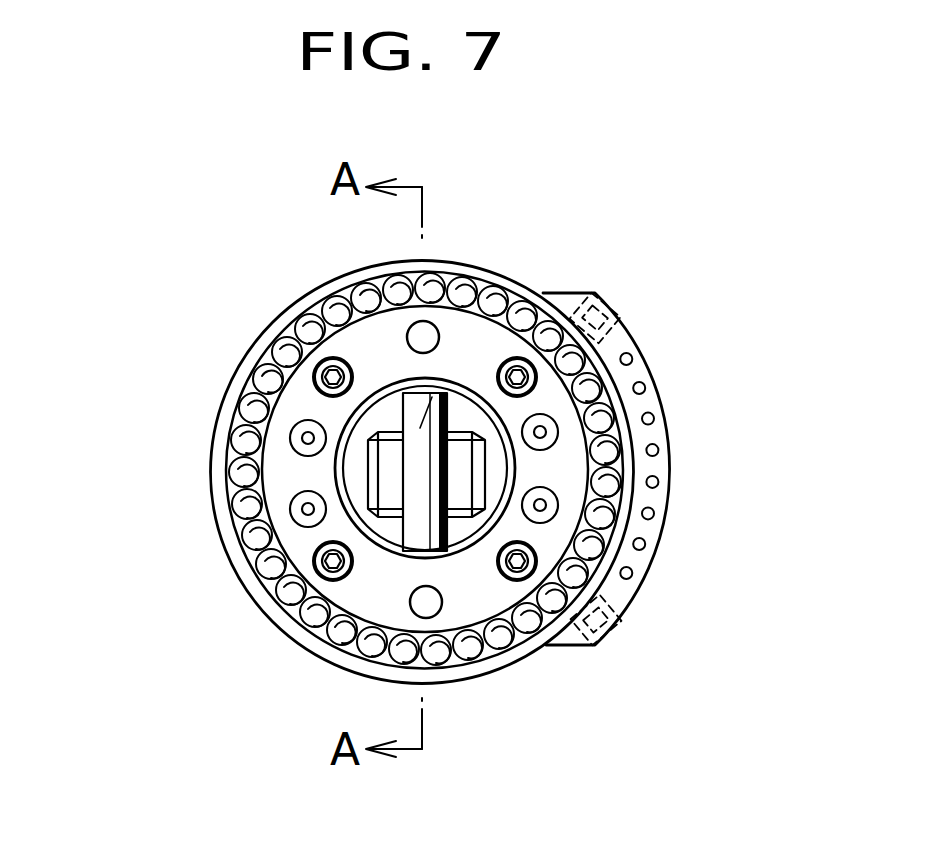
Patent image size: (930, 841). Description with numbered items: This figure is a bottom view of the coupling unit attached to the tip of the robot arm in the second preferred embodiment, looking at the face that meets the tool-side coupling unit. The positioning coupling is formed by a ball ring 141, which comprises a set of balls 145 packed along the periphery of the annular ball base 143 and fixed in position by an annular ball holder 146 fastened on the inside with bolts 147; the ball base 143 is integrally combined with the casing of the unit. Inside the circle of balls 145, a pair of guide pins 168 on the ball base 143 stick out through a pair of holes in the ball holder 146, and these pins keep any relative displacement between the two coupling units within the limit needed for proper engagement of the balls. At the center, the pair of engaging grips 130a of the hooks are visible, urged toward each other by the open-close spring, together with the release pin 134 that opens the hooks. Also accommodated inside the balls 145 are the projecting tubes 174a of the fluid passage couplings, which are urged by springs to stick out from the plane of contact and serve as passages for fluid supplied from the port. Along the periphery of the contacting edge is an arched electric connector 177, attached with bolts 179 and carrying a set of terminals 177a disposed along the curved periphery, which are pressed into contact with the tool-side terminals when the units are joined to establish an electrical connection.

The engaging grips 130a is at (390, 487).
The release pin 134 is at (445, 395).
The ball ring 141 is at (538, 286).
The ball base 143 is at (228, 398).
The balls 145 is at (332, 313).
The ball holder 146 is at (285, 460).
The bolts 147 is at (328, 377).
The guide pins 168 is at (425, 337).
The projecting tube 174a is at (300, 510).
The arched electric connector 177 is at (676, 558).
The terminals 177a is at (655, 514).
The bolts 179 is at (612, 312).